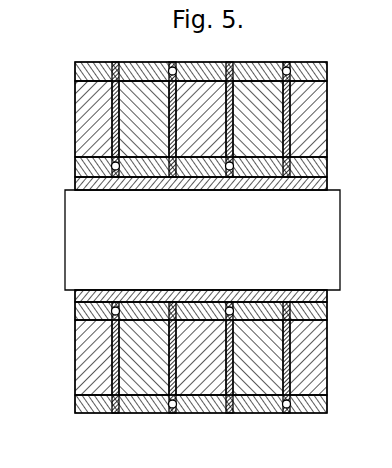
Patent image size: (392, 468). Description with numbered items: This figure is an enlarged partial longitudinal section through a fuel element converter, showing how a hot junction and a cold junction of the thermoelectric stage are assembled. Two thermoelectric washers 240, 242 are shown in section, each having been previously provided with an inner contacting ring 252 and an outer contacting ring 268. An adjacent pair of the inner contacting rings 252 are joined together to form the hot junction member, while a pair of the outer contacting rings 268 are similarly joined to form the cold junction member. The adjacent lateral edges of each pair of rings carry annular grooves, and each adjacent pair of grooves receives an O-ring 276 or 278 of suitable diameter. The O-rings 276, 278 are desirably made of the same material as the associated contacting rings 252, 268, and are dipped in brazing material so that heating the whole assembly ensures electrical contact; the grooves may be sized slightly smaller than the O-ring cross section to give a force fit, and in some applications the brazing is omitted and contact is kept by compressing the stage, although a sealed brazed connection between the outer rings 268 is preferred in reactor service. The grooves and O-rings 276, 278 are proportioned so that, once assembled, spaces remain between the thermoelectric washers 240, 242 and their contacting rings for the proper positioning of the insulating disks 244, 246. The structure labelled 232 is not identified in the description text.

The frame / spacer plate 232 is at (77, 183).
The thermoelectric washer 240 is at (82, 113).
The thermoelectric washer 242 is at (137, 131).
The insulating disk 244 is at (174, 178).
The insulating disk 246 is at (117, 62).
The inner contacting ring 252 is at (144, 295).
The outer contacting ring 268 is at (143, 415).
The O-ring 276 is at (114, 170).
The O-ring 278 is at (172, 62).